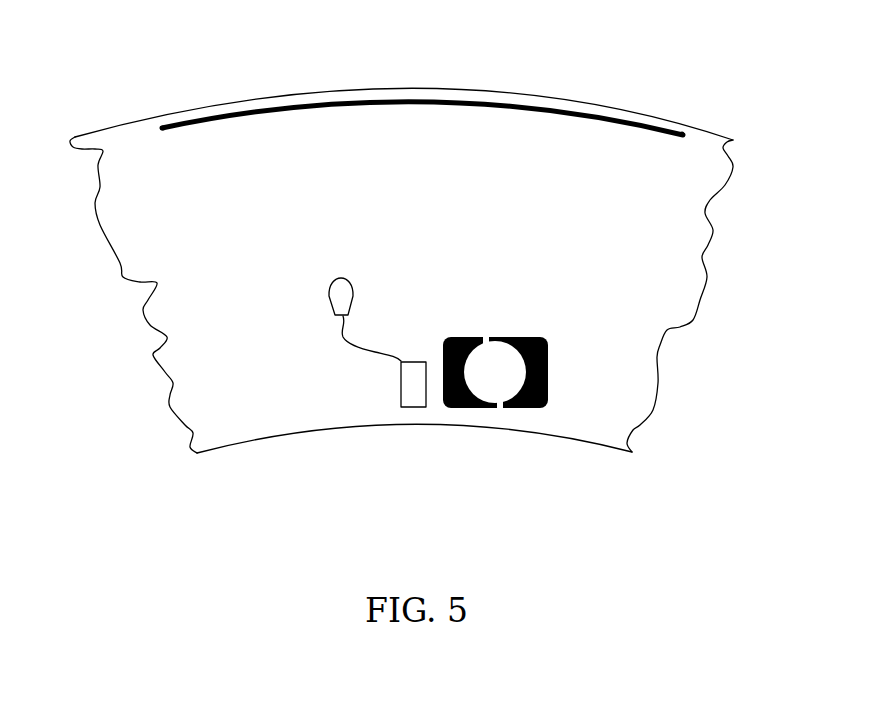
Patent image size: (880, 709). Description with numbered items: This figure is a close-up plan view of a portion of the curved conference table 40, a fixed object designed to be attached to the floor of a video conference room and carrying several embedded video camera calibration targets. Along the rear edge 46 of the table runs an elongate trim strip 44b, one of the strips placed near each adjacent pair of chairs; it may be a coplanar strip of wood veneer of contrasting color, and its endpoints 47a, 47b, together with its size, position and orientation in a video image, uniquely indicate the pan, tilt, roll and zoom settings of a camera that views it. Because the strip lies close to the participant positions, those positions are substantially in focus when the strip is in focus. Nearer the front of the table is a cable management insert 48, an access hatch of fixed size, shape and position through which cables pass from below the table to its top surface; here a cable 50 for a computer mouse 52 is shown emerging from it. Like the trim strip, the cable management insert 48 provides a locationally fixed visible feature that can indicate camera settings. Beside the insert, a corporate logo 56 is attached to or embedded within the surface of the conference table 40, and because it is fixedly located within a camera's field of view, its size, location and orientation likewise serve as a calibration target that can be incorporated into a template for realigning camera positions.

The conference table 40 is at (478, 243).
The trim strip 44b is at (383, 100).
The rear edge 46 is at (483, 88).
The endpoint 47a is at (163, 126).
The endpoint 47b is at (682, 131).
The cable management insert 48 is at (403, 402).
The cable 50 is at (363, 352).
The computer mouse 52 is at (342, 293).
The corporate logo 56 is at (512, 392).